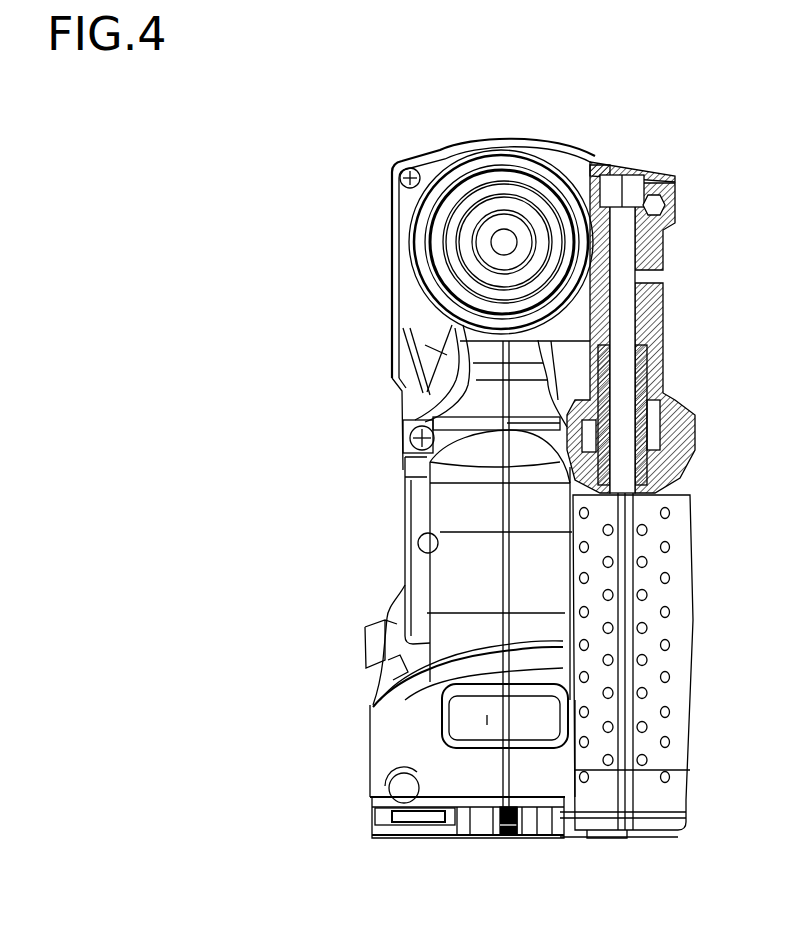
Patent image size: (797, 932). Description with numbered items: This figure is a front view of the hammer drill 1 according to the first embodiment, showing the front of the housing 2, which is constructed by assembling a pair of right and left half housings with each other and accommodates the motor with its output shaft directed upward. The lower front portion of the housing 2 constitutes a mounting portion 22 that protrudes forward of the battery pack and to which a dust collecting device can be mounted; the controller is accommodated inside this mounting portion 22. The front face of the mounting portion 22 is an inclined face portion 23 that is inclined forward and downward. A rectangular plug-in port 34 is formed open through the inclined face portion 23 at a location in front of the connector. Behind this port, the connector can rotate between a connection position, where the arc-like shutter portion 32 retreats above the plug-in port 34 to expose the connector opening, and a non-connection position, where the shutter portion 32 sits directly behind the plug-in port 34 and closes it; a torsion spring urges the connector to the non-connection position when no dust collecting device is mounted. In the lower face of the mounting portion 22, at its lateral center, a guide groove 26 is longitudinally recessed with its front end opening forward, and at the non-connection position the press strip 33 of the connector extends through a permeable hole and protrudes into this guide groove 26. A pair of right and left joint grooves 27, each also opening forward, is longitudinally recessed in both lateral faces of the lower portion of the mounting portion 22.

The hammer drill 1 is at (577, 133).
The housing 2 is at (466, 140).
The mounting portion 22 is at (370, 757).
The inclined face portion 23 is at (462, 568).
The guide groove 26 is at (507, 838).
The joint grooves 27 is at (372, 815).
The shutter portion 32 is at (487, 720).
The press strip 33 is at (522, 822).
The plug-in port 34 is at (445, 718).